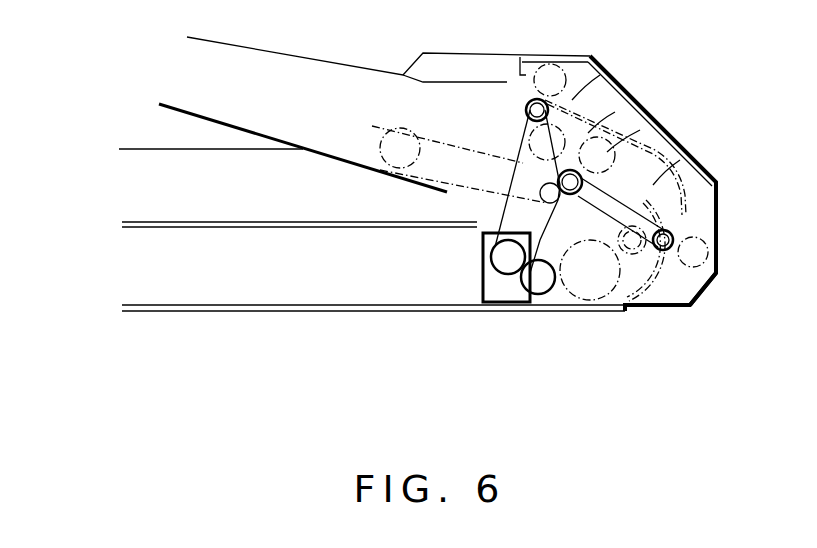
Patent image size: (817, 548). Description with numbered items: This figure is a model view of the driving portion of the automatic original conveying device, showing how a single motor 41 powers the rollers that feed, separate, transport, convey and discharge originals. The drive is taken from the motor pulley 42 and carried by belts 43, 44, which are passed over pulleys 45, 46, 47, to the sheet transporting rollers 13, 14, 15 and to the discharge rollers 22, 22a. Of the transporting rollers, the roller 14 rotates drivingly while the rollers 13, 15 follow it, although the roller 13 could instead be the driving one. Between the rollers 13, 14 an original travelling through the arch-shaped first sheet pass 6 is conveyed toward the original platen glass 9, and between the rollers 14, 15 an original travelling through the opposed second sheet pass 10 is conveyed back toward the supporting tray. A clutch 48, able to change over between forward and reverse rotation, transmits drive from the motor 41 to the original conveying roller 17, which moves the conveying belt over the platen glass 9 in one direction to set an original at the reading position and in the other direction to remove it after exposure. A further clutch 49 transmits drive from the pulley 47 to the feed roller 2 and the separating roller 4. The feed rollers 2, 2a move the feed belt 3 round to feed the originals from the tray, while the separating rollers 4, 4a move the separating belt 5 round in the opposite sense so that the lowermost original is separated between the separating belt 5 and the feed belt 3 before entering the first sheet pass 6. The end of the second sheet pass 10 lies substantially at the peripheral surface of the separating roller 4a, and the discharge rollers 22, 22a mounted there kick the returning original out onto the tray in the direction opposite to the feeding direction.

The feed roller 2 is at (653, 185).
The feed roller 2a is at (398, 135).
The feed belt 3 is at (472, 190).
The separating roller 4 is at (607, 152).
The separating roller 4a is at (540, 150).
The separating belt 5 is at (572, 130).
The first sheet pass 6 is at (655, 275).
The original platen glass 9 is at (270, 312).
The second sheet pass 10 is at (718, 181).
The sheet transporting roller 13 is at (628, 258).
The sheet transporting roller 14 is at (690, 297).
The sheet transporting roller 15 is at (697, 253).
The original conveying roller 17 is at (588, 292).
The discharge roller 22 is at (553, 78).
The discharge roller 22a is at (525, 92).
The motor 41 is at (490, 287).
The motor pulley 42 is at (508, 272).
The belt 43 is at (527, 120).
The belt 44 is at (683, 190).
The pulley 45 is at (572, 100).
The pulley 46 is at (675, 232).
The pulley 47 is at (540, 196).
The clutch 48 is at (540, 292).
The clutch 49 is at (588, 133).